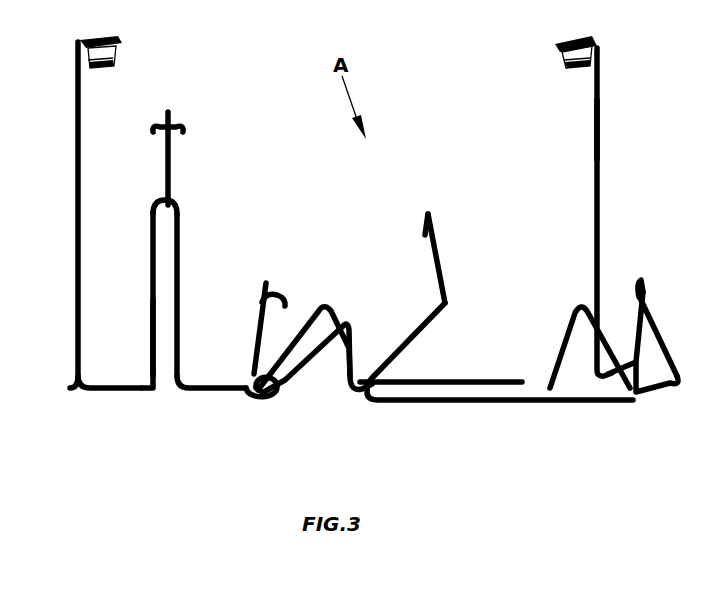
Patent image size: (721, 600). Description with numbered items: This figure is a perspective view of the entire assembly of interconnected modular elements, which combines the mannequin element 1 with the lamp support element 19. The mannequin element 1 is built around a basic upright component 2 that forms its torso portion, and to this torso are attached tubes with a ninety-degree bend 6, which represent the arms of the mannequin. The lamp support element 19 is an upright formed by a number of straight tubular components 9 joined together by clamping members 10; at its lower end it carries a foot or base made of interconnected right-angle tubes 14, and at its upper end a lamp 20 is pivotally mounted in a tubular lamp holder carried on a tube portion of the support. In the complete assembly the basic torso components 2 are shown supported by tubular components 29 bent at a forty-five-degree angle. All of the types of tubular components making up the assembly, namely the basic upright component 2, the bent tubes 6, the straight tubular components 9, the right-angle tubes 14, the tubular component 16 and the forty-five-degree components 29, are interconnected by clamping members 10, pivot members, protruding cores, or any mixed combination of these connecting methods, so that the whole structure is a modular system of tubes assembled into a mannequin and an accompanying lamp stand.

The mannequin element 1 is at (148, 203).
The basic upright component 2 is at (182, 150).
The tube with a 90° bend 6 is at (178, 206).
The straight tubular component 9 is at (116, 396).
The clamping member 10 is at (153, 295).
The right-angle tube 14 is at (82, 386).
The tubular component 16 is at (468, 379).
The lamp support element 19 is at (70, 233).
The lamp 20 is at (118, 52).
The tubular component bent at a 45° angle 29 is at (327, 303).